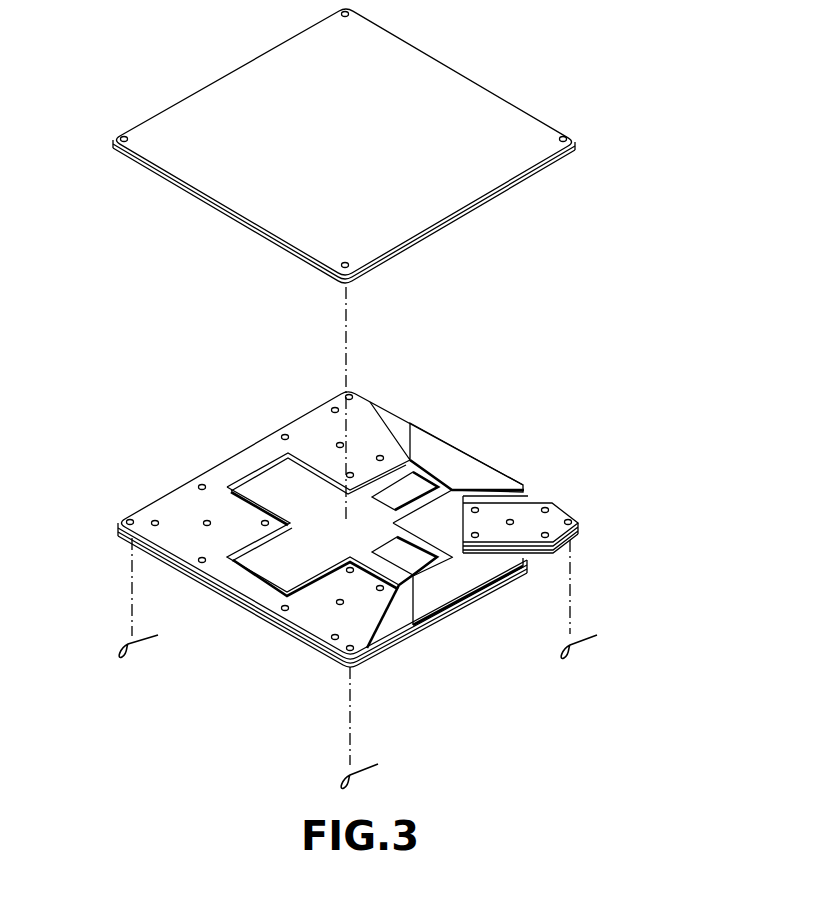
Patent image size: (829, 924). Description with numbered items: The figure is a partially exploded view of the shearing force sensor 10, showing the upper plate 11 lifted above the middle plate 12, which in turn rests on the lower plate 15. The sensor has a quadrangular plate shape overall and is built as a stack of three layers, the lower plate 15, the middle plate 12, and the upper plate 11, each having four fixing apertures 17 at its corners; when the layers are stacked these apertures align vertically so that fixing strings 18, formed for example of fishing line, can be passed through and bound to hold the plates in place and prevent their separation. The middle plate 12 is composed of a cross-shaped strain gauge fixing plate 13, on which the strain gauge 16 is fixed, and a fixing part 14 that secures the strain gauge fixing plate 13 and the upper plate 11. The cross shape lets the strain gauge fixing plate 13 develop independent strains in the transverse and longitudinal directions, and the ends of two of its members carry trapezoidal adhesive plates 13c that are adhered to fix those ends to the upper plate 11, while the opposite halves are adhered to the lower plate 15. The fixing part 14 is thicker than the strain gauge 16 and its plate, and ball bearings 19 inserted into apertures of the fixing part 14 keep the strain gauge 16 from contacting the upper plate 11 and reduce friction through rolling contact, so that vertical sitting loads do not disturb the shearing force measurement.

The shearing force sensor 10 is at (138, 440).
The upper plate 11 is at (465, 82).
The middle plate 12 is at (168, 368).
The strain gauge fixing plate 13 is at (271, 478).
The adhesive plate 13c is at (382, 452).
The fixing part 14 is at (224, 471).
The lower plate 15 is at (287, 632).
The strain gauge 16 is at (408, 492).
The fixing aperture 17 is at (563, 136).
The fixing string 18 is at (118, 645).
The ball bearing 19 is at (511, 518).